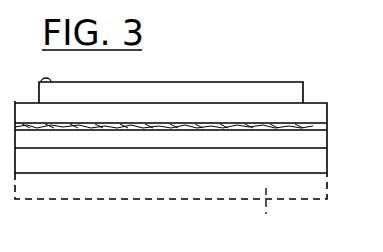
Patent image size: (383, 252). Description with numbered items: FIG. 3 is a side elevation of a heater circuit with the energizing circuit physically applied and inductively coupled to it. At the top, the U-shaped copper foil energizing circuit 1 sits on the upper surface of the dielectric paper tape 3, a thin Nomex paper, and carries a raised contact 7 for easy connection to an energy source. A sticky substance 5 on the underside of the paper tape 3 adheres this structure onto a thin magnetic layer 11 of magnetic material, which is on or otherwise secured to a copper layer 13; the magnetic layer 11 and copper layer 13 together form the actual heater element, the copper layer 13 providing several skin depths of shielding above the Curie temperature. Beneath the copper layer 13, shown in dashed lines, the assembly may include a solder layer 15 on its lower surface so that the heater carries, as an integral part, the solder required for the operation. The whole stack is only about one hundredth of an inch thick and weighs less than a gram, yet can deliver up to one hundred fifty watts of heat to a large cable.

The energizing circuit 1 is at (261, 86).
The dielectric paper tape 3 is at (318, 113).
The sticky substance 5 is at (315, 138).
The raised contact 7 is at (49, 78).
The magnetic layer 11 is at (303, 163).
The copper layer 13 is at (328, 188).
The solder layer 15 is at (270, 221).